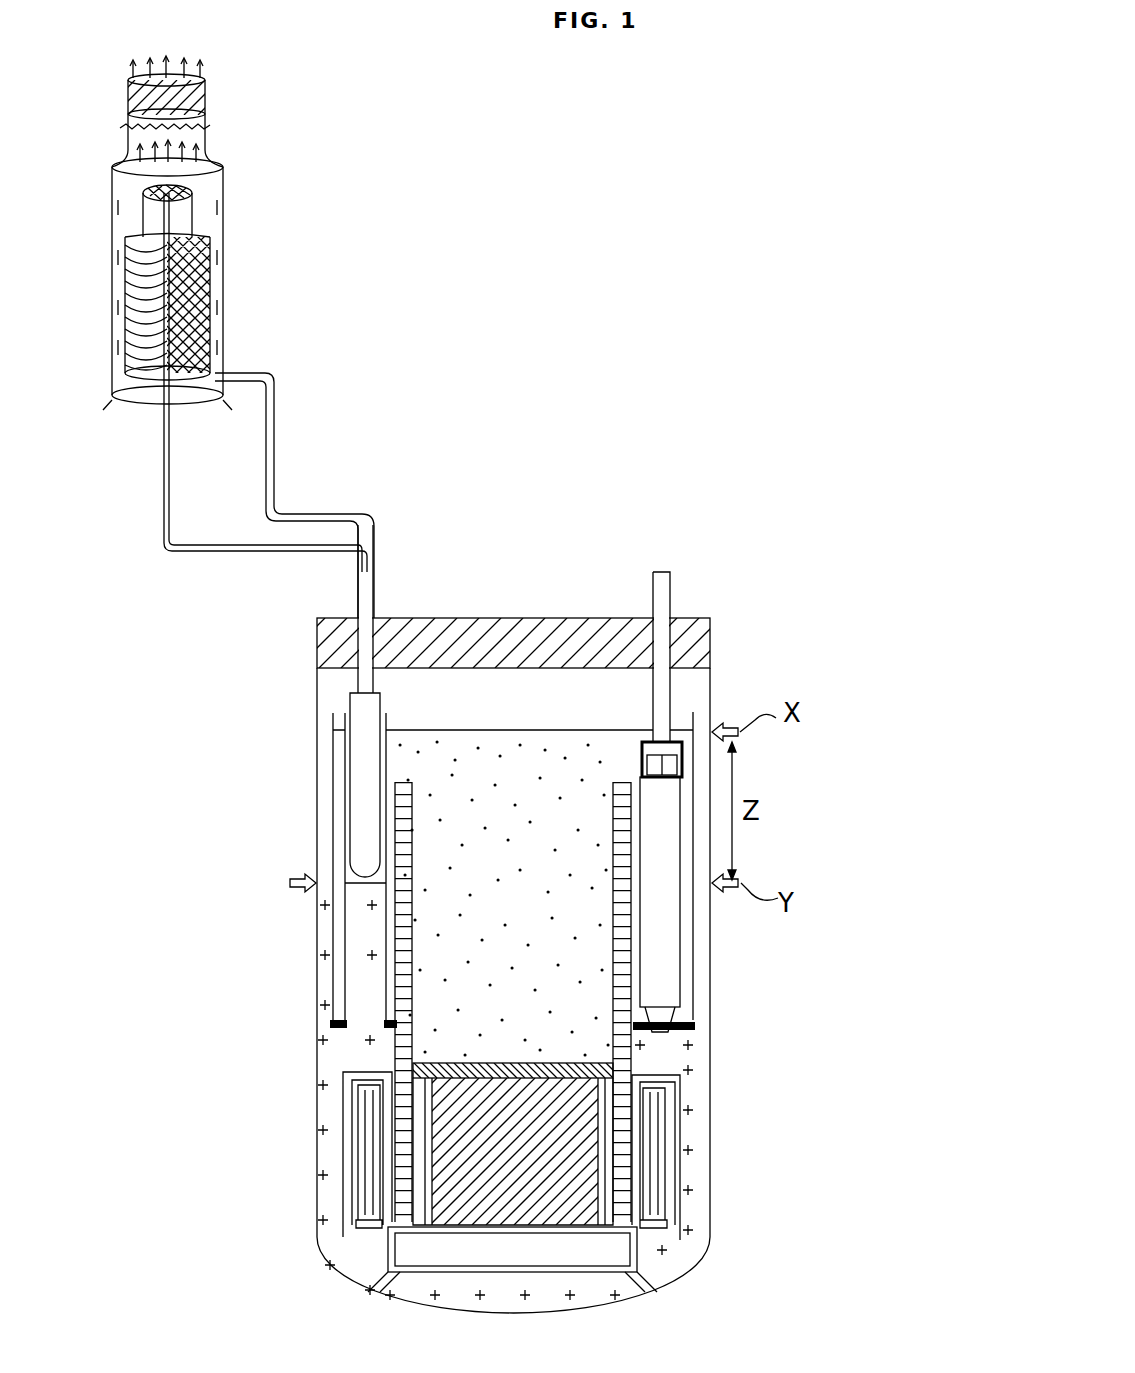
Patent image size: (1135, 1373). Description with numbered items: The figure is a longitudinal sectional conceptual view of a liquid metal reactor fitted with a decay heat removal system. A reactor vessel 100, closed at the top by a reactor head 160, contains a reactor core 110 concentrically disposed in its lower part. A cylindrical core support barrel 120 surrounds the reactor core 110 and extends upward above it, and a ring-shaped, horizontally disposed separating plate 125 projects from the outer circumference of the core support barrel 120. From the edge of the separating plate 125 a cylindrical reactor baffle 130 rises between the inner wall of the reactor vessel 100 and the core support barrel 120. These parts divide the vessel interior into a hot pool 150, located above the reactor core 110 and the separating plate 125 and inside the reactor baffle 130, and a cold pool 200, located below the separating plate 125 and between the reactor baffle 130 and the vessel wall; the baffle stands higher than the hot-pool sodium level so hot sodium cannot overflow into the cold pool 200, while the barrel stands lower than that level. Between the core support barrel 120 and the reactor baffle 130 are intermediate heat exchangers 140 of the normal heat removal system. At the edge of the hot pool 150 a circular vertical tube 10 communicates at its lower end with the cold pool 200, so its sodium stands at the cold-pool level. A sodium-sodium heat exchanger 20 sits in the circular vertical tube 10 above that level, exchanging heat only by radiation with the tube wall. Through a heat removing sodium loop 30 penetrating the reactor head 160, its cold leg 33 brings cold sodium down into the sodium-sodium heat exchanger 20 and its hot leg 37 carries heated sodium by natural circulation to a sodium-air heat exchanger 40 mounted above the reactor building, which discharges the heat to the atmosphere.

The circular vertical tube 10 is at (345, 776).
The sodium-sodium heat exchanger 20 is at (366, 737).
The heat removing sodium loop 30 is at (277, 495).
The cold leg 33 is at (308, 512).
The hot leg 37 is at (327, 540).
The sodium-air heat exchanger 40 is at (226, 232).
The reactor vessel 100 is at (316, 738).
The reactor core 110 is at (470, 1165).
The core support barrel 120 is at (406, 900).
The separating plate 125 is at (342, 1022).
The reactor baffle 130 is at (331, 815).
The intermediate heat exchanger 140 is at (657, 921).
The hot pool 150 is at (576, 752).
The reactor head 160 is at (527, 636).
The cold pool 200 is at (694, 1113).